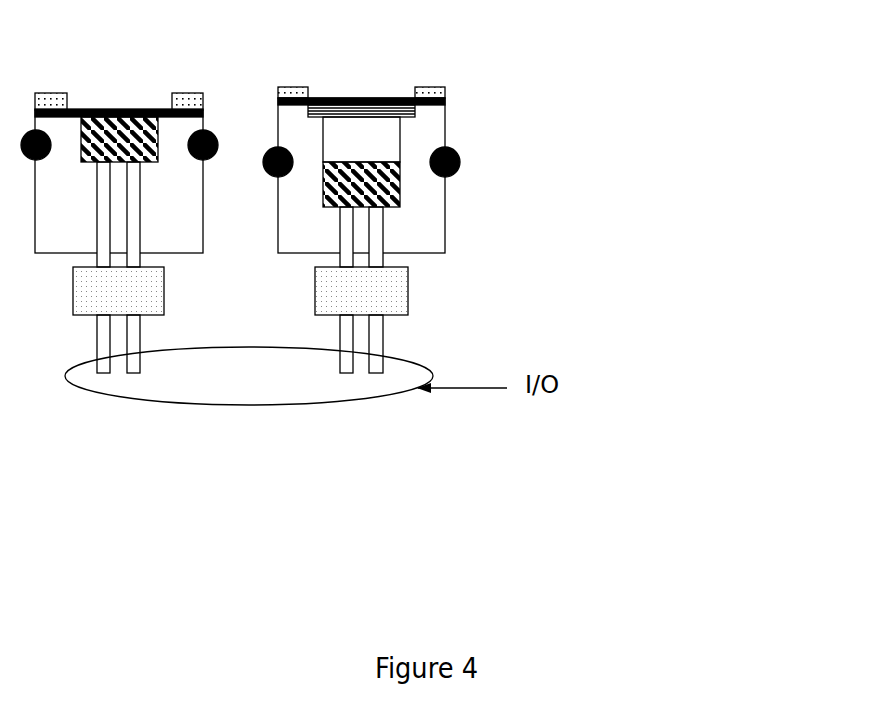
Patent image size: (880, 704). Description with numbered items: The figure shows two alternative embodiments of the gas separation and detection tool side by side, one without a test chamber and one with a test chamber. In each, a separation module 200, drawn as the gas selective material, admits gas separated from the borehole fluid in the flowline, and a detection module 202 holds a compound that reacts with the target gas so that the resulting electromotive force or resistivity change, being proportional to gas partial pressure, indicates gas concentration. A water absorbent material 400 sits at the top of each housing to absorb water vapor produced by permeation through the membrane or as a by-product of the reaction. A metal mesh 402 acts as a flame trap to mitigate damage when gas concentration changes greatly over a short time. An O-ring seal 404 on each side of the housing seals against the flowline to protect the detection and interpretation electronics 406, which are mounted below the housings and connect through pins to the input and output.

The water absorbent material 400 is at (50, 85).
The metal mesh 402 is at (460, 102).
The separation module 200 is at (432, 119).
The O-ring seal 404 is at (462, 163).
The detection module 202 is at (160, 167).
The detection and interpretation electronics 406 is at (143, 300).